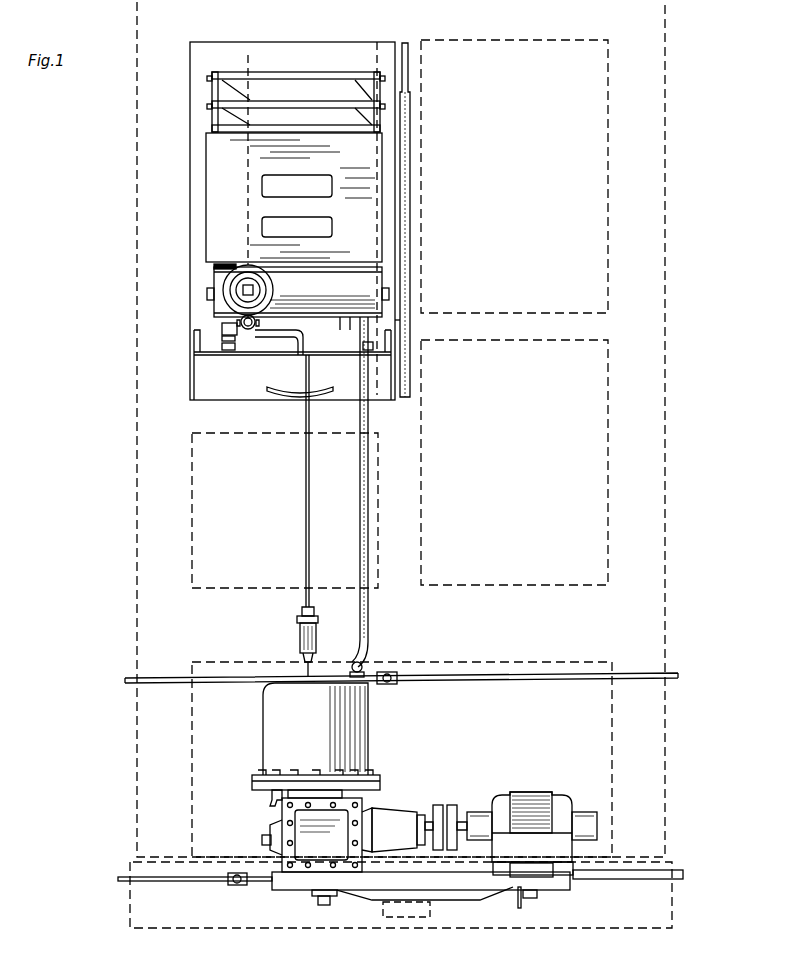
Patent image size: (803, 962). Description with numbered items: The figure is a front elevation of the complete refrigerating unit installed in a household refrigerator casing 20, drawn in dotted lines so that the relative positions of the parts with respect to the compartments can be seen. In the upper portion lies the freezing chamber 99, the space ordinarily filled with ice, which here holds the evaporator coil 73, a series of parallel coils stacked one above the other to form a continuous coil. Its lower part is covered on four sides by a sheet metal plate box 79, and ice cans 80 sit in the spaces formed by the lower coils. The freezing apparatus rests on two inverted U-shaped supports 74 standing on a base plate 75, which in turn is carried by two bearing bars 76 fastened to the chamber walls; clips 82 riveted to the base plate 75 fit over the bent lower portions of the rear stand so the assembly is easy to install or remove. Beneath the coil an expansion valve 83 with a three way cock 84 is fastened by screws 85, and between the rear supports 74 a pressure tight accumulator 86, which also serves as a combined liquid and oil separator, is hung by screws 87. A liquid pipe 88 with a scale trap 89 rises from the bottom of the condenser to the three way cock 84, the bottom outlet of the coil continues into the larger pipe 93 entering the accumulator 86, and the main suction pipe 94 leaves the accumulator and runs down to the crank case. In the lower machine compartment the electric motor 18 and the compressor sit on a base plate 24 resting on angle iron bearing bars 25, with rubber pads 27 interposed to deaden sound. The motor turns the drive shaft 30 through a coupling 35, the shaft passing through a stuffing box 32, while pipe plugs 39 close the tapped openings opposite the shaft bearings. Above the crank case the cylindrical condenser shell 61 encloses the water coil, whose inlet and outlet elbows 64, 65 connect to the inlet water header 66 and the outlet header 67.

The electric motor 18 is at (530, 791).
The refrigerator casing 20 is at (136, 150).
The base plate 24 is at (280, 862).
The angle iron bearing bars 25 is at (340, 898).
The rubber pads 27 is at (427, 898).
The drive shaft 30 is at (431, 806).
The stuffing box 32 is at (396, 812).
The coupling 35 is at (449, 804).
The pipe plugs 39 is at (262, 843).
The condenser shell 61 is at (257, 711).
The elbow 64 is at (270, 805).
The elbow 65 is at (366, 662).
The inlet water header 66 is at (120, 877).
The outlet header 67 is at (131, 677).
The evaporator coil 73 is at (310, 75).
The inverted U-shaped supports 74 is at (403, 322).
The base plate 75 is at (304, 356).
The bearing bars 76 is at (292, 356).
The sheet metal plate box 79 is at (386, 167).
The ice cans 80 is at (297, 206).
The clips 82 is at (363, 344).
The expansion valve 83 is at (272, 292).
The three way cock 84 is at (256, 326).
The screws 85 is at (214, 271).
The accumulator 86 is at (348, 318).
The screws 87 is at (207, 300).
The liquid pipe 88 is at (222, 328).
The scale trap 89 is at (318, 628).
The larger pipe 93 is at (236, 290).
The main suction pipe 94 is at (368, 373).
The freezing chamber 99 is at (190, 92).